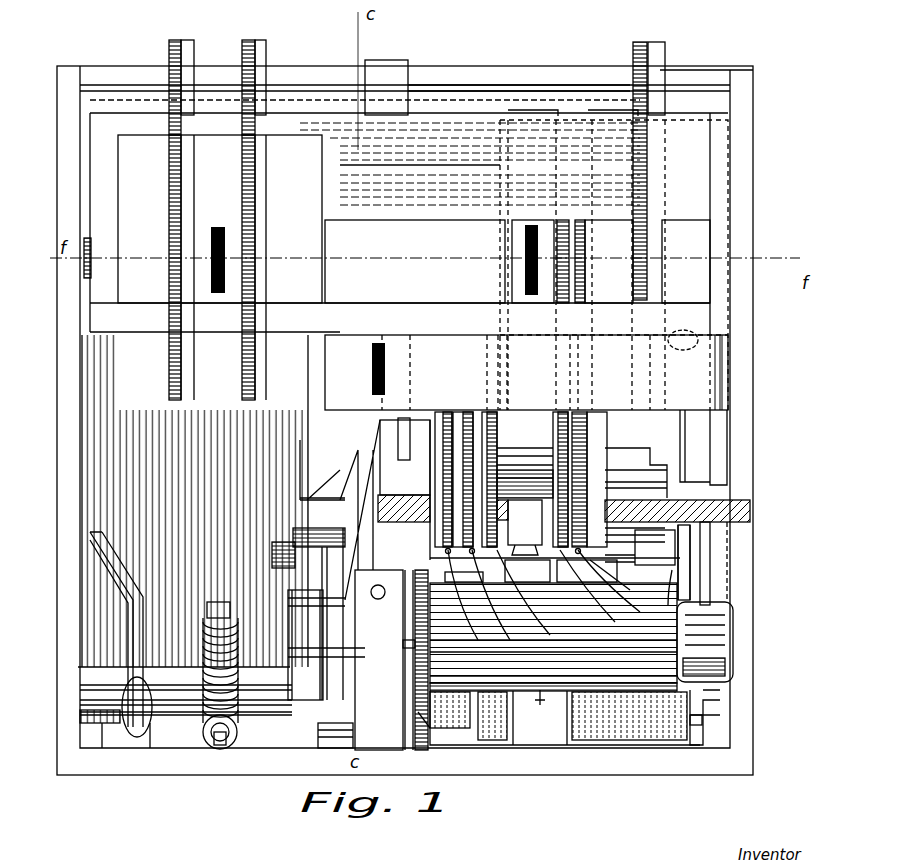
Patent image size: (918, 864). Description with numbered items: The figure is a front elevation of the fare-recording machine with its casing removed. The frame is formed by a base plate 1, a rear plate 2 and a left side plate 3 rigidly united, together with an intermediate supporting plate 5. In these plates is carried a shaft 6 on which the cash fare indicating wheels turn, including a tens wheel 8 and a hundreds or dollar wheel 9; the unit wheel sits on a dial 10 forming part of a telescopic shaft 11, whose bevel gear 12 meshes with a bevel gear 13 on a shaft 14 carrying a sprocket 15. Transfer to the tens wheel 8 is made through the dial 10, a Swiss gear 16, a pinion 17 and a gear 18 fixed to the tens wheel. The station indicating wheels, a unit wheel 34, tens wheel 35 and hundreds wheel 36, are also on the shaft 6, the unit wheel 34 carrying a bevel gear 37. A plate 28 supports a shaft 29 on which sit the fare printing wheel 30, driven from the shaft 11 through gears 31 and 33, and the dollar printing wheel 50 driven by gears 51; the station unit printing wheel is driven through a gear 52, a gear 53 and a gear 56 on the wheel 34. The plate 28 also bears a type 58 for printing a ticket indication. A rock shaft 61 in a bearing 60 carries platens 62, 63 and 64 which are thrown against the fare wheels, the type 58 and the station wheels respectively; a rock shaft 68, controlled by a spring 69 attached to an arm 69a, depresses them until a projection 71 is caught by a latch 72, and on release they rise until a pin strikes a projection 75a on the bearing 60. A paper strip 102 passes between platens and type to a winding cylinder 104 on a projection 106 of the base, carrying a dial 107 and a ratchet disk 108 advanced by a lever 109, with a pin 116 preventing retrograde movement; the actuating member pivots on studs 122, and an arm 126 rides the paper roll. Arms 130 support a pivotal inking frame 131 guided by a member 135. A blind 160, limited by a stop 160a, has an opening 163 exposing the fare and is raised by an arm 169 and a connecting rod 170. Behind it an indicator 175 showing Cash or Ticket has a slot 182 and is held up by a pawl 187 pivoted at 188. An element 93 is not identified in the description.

The base plate 1 is at (756, 152).
The rear plate 2 is at (468, 72).
The left side plate 3 is at (65, 540).
The intermediate supporting plate 5 is at (355, 488).
The shaft 6 is at (88, 277).
The tens wheel 8 is at (610, 304).
The hundreds or dollar wheel 9 is at (545, 300).
The dial 10 is at (732, 220).
The telescopic shaft 11 is at (190, 40).
The bevel gear 12 is at (171, 50).
The bevel gear 13 is at (174, 292).
The shaft 14 is at (529, 596).
The sprocket 15 is at (491, 596).
The Swiss gear 16 is at (665, 58).
The pinion 17 is at (633, 54).
The gear 18 is at (730, 293).
The plate 28 is at (740, 520).
The shaft 29 is at (655, 478).
The unit or tens printing wheel 30 is at (605, 540).
The gear 31 is at (580, 418).
The gear 33 is at (581, 214).
The unit wheel 34 is at (300, 470).
The tens wheel 35 is at (592, 332).
The hundreds wheel 36 is at (193, 501).
The bevel gear 37 is at (515, 500).
The printing wheel 50 is at (619, 609).
The gears 51 is at (558, 214).
The gear 52 is at (500, 445).
The gear 53 is at (500, 320).
The gear 56 is at (395, 168).
The type 58 is at (525, 540).
The bearing 60 is at (308, 573).
The rock shaft 61 is at (272, 552).
The platen 62 is at (612, 601).
The platen 63 is at (587, 598).
The platen 64 is at (535, 649).
The rock shaft 68 is at (240, 705).
The spring 69 is at (205, 642).
The arm 69a is at (215, 602).
The projection 71 is at (372, 599).
The latch 72 is at (405, 640).
The projection 75a is at (288, 600).
The base block 93 is at (565, 651).
The paper strip 102 is at (565, 643).
The winding cylinder 104 is at (700, 624).
The projection 106 is at (290, 655).
The dial 107 is at (430, 730).
The ratchet disk 108 is at (415, 712).
The lever 109 is at (403, 660).
The pin 116 is at (383, 657).
The studs 122 is at (405, 690).
The arm 126 is at (480, 680).
The arms 130 is at (375, 572).
The pivotal frame 131 is at (385, 500).
The member 135 is at (705, 568).
The blind or shield 160 is at (425, 140).
The stop 160a is at (385, 78).
The opening 163 is at (415, 218).
The arm 169 is at (153, 712).
The connecting rod 170 is at (112, 492).
The indicator 175 is at (388, 345).
The slot 182 is at (307, 500).
The pawl 187 is at (404, 420).
The pivot 188 is at (440, 415).